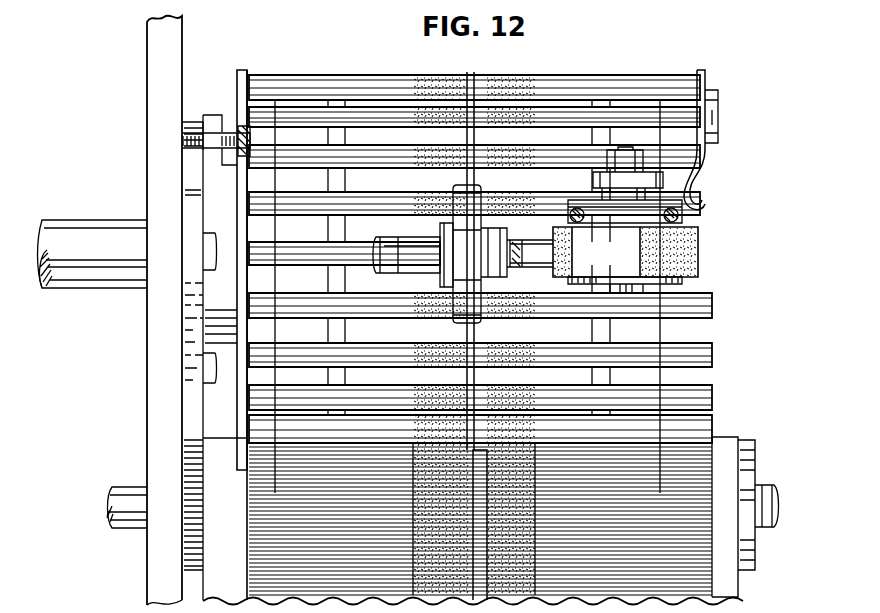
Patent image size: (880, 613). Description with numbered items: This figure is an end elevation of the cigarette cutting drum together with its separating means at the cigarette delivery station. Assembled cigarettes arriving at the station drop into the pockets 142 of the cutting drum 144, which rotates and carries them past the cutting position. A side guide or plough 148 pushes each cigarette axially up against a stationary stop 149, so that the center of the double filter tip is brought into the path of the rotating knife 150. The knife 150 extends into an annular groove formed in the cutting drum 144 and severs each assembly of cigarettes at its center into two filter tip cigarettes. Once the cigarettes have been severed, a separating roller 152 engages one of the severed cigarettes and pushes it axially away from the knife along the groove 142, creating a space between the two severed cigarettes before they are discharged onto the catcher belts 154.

The pockets 142 is at (476, 342).
The cutting drum 144 is at (370, 137).
The side guide or plough 148 is at (705, 83).
The stationary stop 149 is at (242, 93).
The rotating knife 150 is at (470, 217).
The separating roller 152 is at (677, 255).
The catcher belts 154 is at (720, 462).